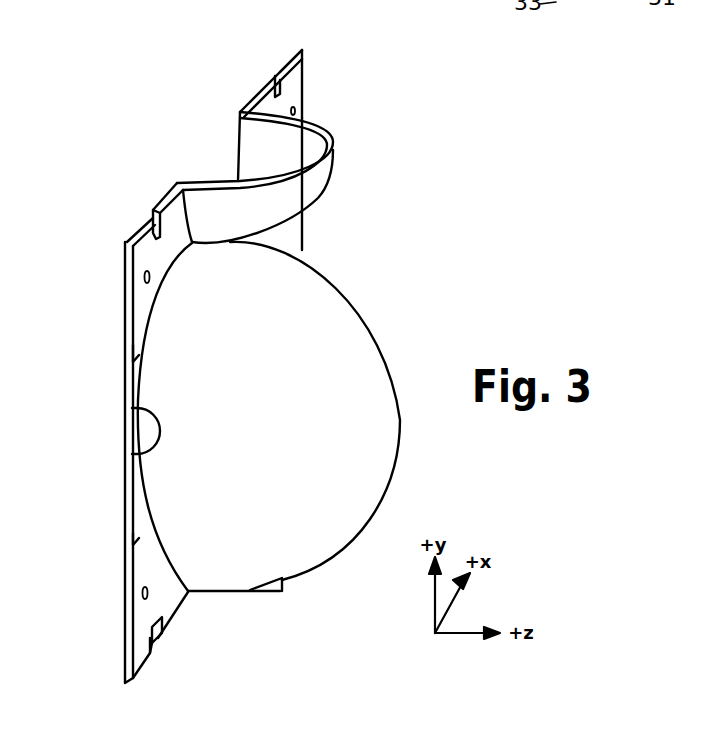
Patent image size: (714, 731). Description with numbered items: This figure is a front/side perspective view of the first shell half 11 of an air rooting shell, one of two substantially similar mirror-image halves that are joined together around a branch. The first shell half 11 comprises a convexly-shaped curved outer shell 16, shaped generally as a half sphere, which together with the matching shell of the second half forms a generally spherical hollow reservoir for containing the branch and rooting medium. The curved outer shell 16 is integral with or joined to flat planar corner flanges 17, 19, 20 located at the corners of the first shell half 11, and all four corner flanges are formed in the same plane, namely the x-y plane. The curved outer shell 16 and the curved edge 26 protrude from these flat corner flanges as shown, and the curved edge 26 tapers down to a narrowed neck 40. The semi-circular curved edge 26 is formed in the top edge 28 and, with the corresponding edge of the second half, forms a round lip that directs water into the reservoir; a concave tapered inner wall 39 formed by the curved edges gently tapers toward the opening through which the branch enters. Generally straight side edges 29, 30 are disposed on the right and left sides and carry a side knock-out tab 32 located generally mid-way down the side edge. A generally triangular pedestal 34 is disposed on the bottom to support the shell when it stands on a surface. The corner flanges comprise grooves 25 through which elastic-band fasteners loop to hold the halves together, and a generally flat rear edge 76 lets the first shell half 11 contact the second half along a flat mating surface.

The first shell half 11 is at (167, 76).
The curved outer shell 16 is at (276, 442).
The corner flange 17 is at (293, 88).
The corner flange 19 is at (140, 636).
The corner flange 20 is at (150, 228).
The groove 25 is at (274, 78).
The curved edge 26 is at (334, 138).
The top edge 28 is at (276, 74).
The side edge 29 is at (303, 236).
The side edge 30 is at (130, 495).
The side knock-out tab 32 is at (140, 428).
The pedestal 34 is at (262, 594).
The tapered inner wall 39 is at (249, 152).
The narrowed neck 40 is at (253, 241).
The rear edge 76 is at (125, 376).